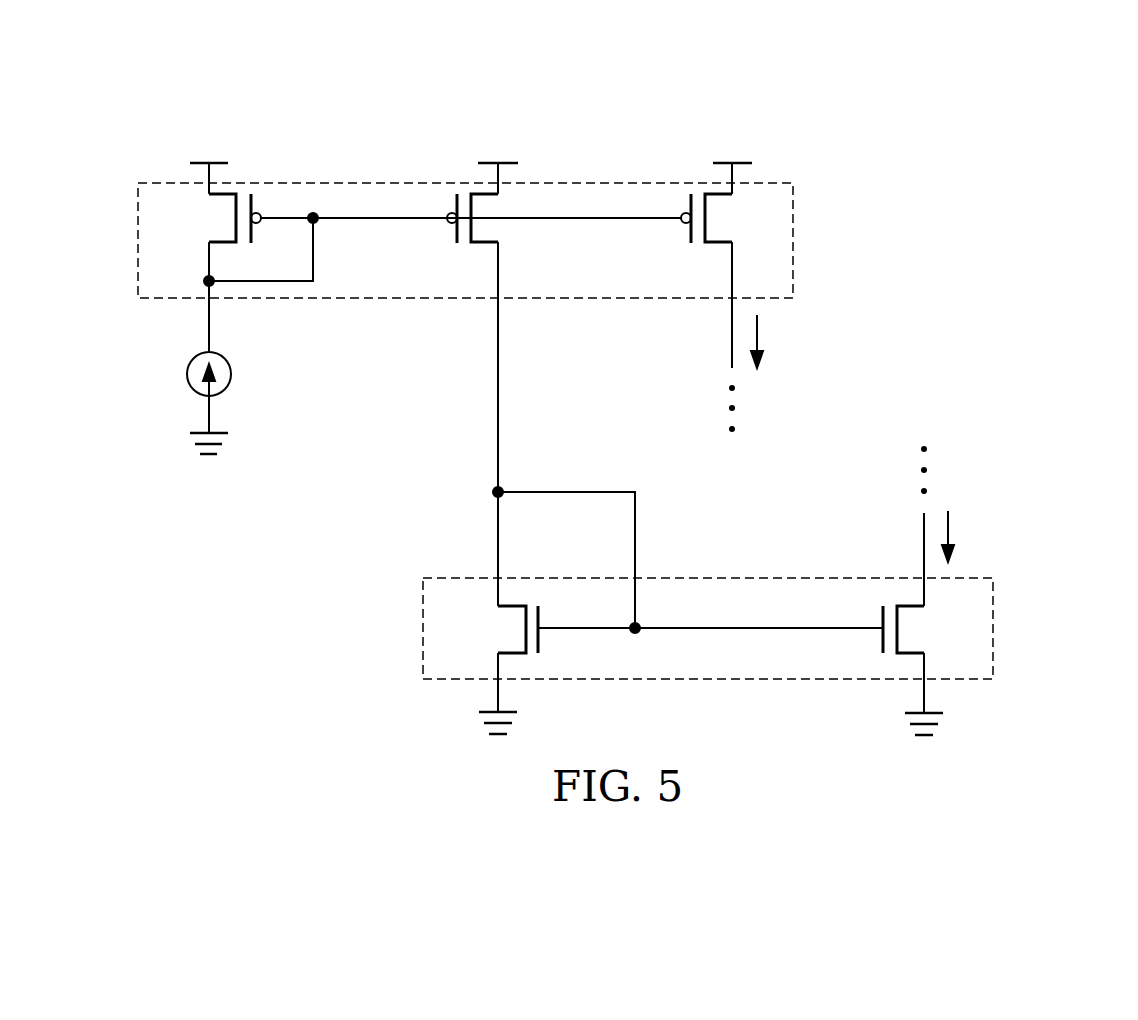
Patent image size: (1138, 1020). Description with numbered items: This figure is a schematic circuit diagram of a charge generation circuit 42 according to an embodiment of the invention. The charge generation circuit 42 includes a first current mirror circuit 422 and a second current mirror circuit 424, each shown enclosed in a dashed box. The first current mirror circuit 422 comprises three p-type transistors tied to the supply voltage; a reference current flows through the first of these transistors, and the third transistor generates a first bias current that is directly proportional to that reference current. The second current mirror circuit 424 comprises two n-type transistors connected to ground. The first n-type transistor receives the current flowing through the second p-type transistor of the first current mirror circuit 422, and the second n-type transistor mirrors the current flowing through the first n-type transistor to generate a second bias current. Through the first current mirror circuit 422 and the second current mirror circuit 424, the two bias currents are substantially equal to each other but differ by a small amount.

The charge generation circuit 42 is at (163, 96).
The first current mirror circuit 422 is at (793, 238).
The second current mirror circuit 424 is at (993, 627).